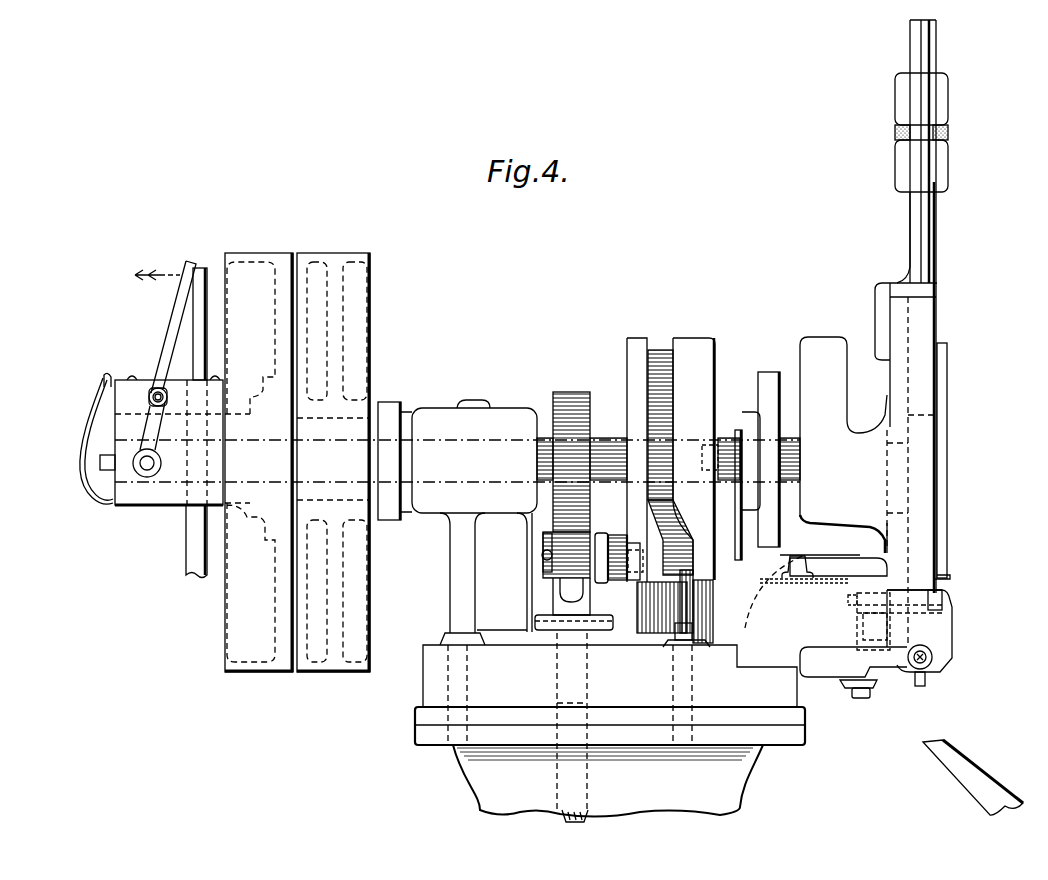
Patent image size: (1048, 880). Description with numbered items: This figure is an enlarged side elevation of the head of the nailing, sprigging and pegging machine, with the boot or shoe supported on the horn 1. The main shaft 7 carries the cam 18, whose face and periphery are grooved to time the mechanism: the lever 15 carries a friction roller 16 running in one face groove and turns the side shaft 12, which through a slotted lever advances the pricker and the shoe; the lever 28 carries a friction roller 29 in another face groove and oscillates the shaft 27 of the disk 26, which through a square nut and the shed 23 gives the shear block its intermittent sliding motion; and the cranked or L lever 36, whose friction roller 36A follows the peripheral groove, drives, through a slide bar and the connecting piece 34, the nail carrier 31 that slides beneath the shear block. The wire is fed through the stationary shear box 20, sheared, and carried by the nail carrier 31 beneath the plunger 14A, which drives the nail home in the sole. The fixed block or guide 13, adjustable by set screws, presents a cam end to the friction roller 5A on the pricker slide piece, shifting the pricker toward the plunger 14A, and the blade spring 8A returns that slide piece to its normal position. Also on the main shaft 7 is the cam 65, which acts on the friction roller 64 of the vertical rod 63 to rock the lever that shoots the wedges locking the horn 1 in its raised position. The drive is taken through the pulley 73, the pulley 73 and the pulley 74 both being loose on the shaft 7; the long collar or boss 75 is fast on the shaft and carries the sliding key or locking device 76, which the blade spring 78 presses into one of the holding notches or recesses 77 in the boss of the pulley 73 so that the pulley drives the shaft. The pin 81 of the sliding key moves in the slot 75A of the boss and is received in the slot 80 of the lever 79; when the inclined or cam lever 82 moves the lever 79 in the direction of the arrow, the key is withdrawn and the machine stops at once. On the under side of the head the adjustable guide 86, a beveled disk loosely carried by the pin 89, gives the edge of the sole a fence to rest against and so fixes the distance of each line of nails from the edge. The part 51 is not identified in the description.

The horn 1 is at (958, 778).
The friction roller 5A is at (946, 578).
The main shaft 7 is at (610, 441).
The blade spring 8A is at (942, 448).
The side shaft 12 is at (623, 543).
The block or guide 13 is at (943, 598).
The plunger 14A is at (920, 687).
The lever 15 is at (607, 537).
The friction roller 16 is at (622, 583).
The cam 18 is at (663, 343).
The shear box 20 is at (930, 623).
The shed 23 is at (860, 633).
The disk 26 is at (862, 558).
The shaft 27 is at (762, 623).
The lever 28 is at (736, 526).
The friction roller 29 is at (717, 443).
The nail carrier 31 is at (933, 673).
The connecting piece 34 is at (853, 662).
The cranked or L lever 36 is at (653, 598).
The friction roller 36A is at (737, 667).
The hub 51 is at (390, 522).
The vertical rod 63 is at (567, 610).
The friction roller 64 is at (565, 560).
The cam 65 is at (570, 400).
The pulley 73 is at (259, 462).
The pulley 74 is at (333, 462).
The long collar or boss 75 is at (163, 455).
The slot 75A is at (143, 397).
The sliding key or locking device 76 is at (108, 375).
The holding notches or recesses 77 is at (258, 382).
The blade spring 78 is at (80, 473).
The lever 79 is at (177, 321).
The slot 80 is at (168, 400).
The pin 81 is at (156, 387).
The inclined or cam lever 82 is at (202, 267).
The adjustable guide 86 is at (875, 689).
The pin 89 is at (856, 699).